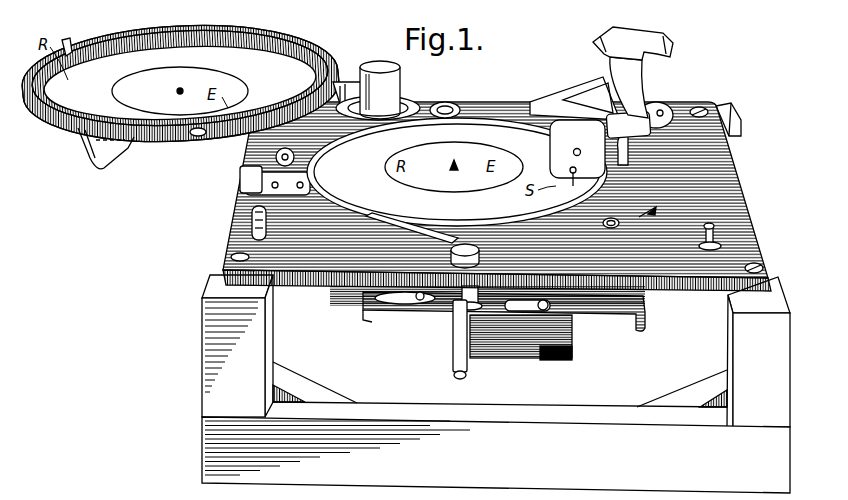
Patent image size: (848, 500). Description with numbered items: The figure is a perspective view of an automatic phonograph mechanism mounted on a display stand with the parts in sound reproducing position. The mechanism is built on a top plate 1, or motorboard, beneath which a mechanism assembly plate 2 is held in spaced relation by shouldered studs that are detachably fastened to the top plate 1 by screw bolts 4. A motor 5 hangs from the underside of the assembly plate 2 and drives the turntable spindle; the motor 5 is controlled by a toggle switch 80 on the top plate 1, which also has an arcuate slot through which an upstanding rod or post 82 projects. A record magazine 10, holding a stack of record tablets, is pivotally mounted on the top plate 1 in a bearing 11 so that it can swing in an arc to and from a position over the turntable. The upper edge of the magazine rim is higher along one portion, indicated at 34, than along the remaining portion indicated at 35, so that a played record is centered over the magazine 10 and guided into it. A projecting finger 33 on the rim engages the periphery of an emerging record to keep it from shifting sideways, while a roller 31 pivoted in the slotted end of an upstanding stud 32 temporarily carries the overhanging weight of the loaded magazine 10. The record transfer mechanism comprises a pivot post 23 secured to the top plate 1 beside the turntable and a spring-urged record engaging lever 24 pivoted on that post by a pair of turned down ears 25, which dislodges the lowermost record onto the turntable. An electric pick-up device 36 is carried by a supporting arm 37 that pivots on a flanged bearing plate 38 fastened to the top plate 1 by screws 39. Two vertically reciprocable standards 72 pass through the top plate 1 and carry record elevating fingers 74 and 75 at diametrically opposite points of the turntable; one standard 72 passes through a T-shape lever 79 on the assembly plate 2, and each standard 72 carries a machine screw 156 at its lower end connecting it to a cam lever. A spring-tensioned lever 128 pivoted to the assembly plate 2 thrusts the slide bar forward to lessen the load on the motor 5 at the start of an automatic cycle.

The top plate 1 is at (736, 200).
The mechanism assembly plate 2 is at (617, 318).
The screw bolts 4 is at (647, 213).
The motor 5 is at (515, 352).
The magazine 10 is at (333, 66).
The bearing 11 is at (412, 100).
The pivot post 23 is at (242, 192).
The record engaging lever 24 is at (275, 160).
The turned down ears 25 is at (243, 185).
The roller 31 is at (251, 217).
The stud 32 is at (234, 250).
The projecting finger 33 is at (86, 165).
The higher wall portion of magazine rim 34 is at (186, 24).
The lower rim portion 35 is at (190, 137).
The electric pick-up device 36 is at (577, 153).
The supporting arm 37 is at (598, 70).
The flanged bearing plate 38 is at (663, 103).
The screws 39 is at (700, 107).
The vertically reciprocable standards 72 is at (453, 360).
The record elevating finger 74 is at (462, 108).
The front record elevating finger 75 is at (451, 256).
The T-shape lever 79 is at (527, 311).
The toggle switch 80 is at (728, 232).
The upstanding rod or post 82 is at (634, 158).
The lever 128 is at (410, 303).
The machine screw 156 is at (460, 378).